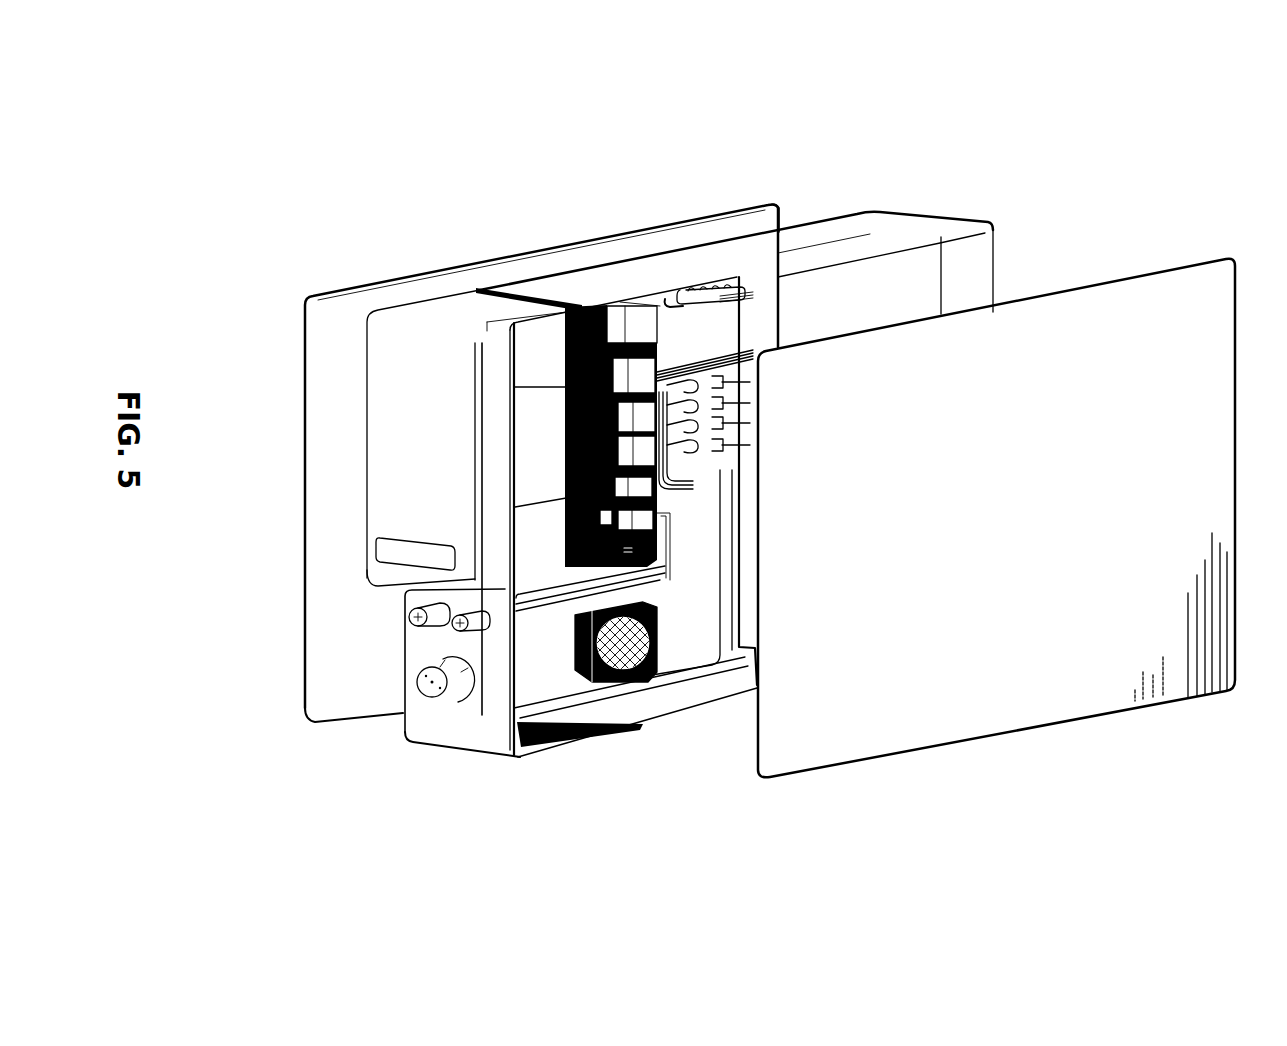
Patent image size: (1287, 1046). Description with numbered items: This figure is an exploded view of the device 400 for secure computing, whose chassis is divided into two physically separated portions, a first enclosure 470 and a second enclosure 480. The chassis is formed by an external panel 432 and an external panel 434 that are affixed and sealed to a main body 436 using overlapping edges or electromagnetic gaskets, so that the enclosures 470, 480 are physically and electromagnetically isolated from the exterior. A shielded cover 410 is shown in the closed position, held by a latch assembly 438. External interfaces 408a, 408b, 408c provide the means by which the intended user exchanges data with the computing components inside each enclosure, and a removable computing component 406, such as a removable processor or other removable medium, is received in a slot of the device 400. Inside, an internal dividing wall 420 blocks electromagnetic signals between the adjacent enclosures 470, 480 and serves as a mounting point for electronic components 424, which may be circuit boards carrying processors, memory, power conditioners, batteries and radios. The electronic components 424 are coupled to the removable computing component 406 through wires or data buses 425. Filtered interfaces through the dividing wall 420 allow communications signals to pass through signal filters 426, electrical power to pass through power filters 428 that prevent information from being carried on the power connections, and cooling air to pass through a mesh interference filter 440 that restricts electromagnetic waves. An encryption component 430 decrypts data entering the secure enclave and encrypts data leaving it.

The device 400 is at (526, 125).
The removable computing component 406 is at (538, 400).
The external interface 408a is at (412, 620).
The external interface 408b is at (457, 622).
The external interface 408c is at (445, 697).
The shielded cover 410 is at (393, 457).
The internal dividing wall 420 is at (538, 667).
The electronic components 424 is at (588, 305).
The wires or data buses 425 is at (723, 353).
The signal filters 426 is at (692, 385).
The power filters 428 is at (710, 292).
The encryption component 430 is at (913, 255).
The external panel 432 is at (1158, 293).
The external panel 434 is at (350, 292).
The main body 436 is at (857, 222).
The latch assembly 438 is at (383, 555).
The interference filter 440 is at (660, 662).
The enclosure 470 is at (970, 280).
The enclosure 480 is at (682, 238).